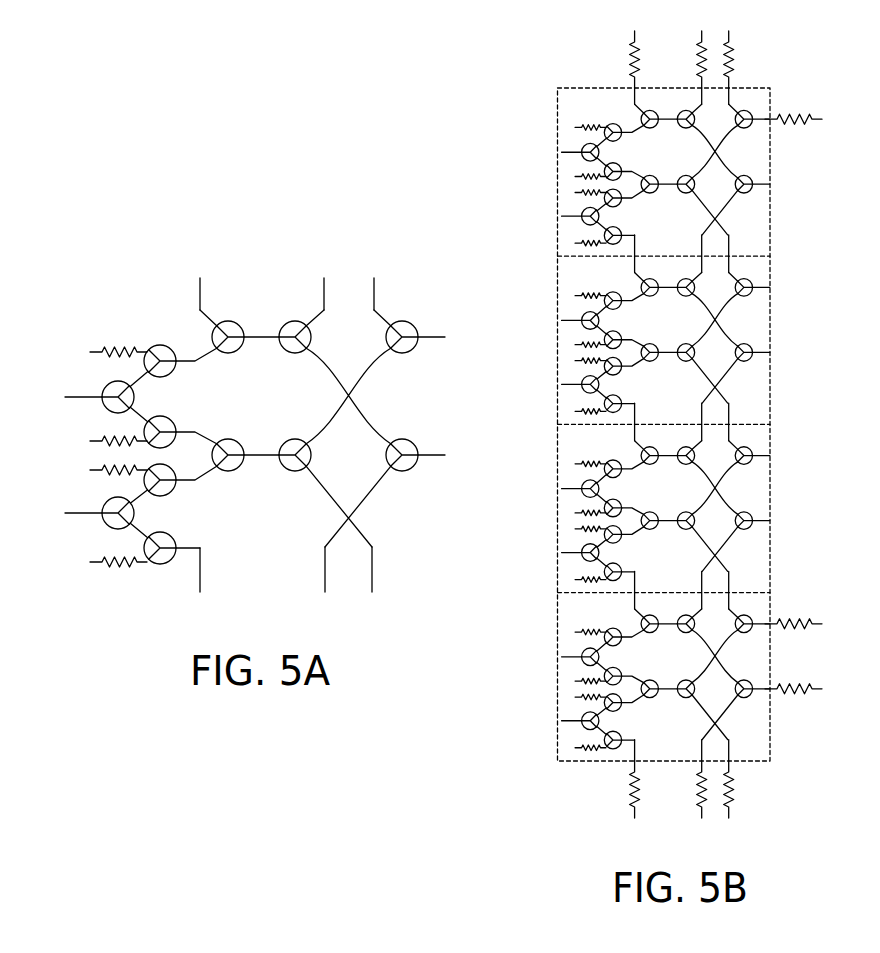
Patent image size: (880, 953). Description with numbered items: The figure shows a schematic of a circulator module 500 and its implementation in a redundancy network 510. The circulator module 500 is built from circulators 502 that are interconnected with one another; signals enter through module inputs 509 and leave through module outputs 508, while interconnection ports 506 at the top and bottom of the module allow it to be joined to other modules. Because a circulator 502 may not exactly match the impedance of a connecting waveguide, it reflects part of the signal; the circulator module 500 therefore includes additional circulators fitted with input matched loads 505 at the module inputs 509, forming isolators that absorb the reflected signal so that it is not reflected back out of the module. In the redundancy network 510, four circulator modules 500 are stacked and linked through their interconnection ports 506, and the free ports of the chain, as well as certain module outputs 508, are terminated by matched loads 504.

In FIG. 5A, the circulator module 500 is at (313, 208).
In FIG. 5B, the circulator module 500 is at (557, 162).
In FIG. 5A, the circulator 502 is at (170, 349).
In FIG. 5B, the matched load 504 is at (629, 62).
In FIG. 5A, the input matched load 505 is at (90, 351).
In FIG. 5A, the interconnection port 506 is at (198, 293).
In FIG. 5A, the module output 508 is at (432, 336).
In FIG. 5A, the module input 509 is at (92, 399).
In FIG. 5B, the redundancy network 510 is at (483, 149).